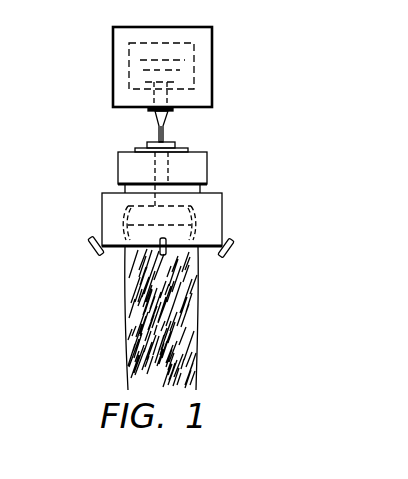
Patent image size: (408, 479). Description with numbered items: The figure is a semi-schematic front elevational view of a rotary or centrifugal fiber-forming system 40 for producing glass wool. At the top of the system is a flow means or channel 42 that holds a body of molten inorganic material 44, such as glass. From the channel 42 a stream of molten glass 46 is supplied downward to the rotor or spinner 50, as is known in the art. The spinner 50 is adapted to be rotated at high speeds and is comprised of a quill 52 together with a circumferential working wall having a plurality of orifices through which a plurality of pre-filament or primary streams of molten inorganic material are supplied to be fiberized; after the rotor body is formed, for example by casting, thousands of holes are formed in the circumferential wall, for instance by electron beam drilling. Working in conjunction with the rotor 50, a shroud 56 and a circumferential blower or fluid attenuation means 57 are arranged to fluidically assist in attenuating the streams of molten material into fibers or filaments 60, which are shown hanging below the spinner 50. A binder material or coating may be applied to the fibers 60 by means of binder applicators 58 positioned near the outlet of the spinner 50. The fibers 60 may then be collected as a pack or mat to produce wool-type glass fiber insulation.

The rotary fiber-forming system 40 is at (204, 146).
The channel 42 is at (212, 40).
The body of molten inorganic material 44 is at (190, 72).
The stream of molten glass 46 is at (165, 129).
The spinner 50 is at (203, 200).
The quill 52 is at (170, 206).
The shroud 56 is at (110, 192).
The circumferential blower 57 is at (118, 153).
The binder applicators 58 is at (88, 243).
The fibers 60 is at (204, 327).